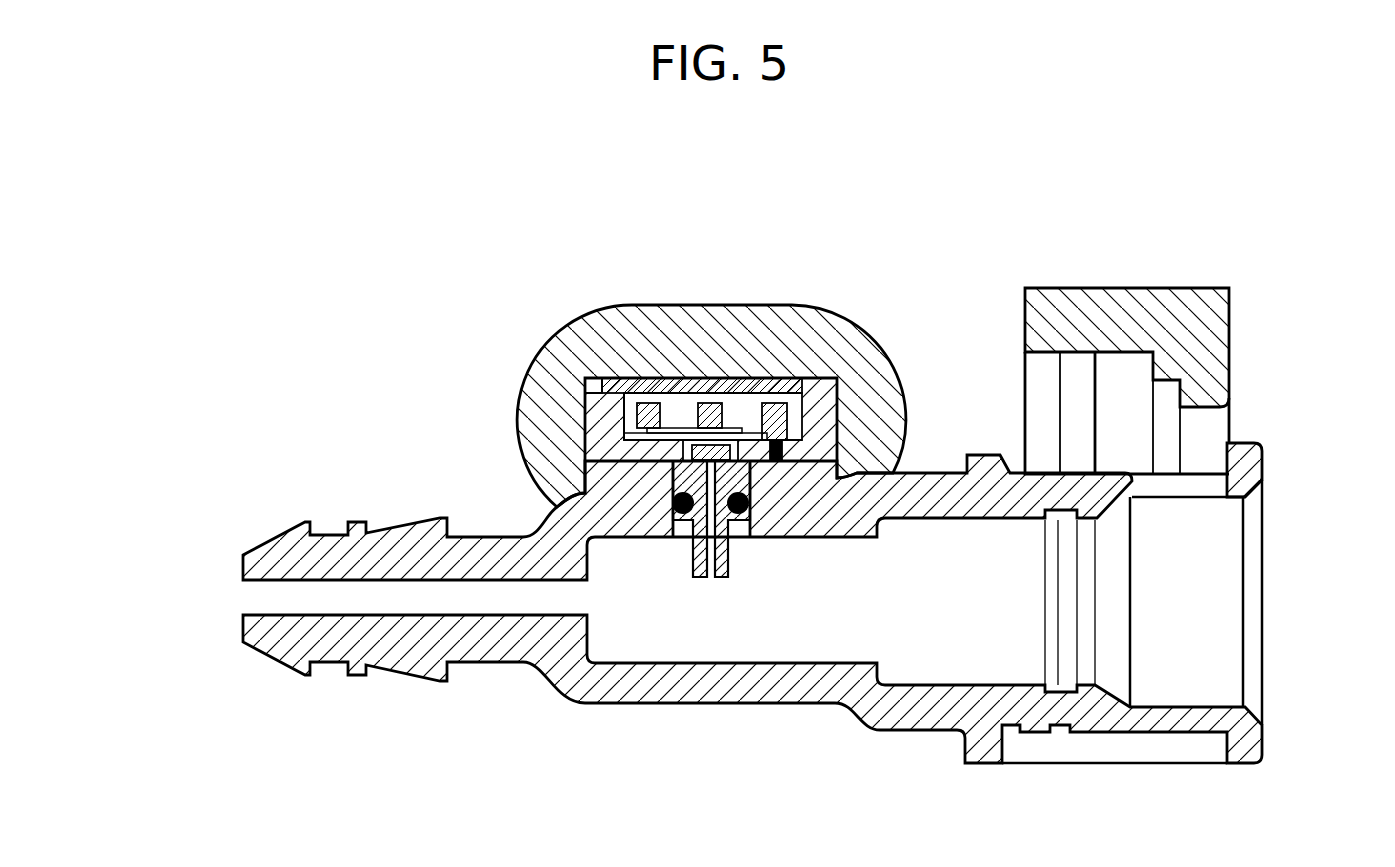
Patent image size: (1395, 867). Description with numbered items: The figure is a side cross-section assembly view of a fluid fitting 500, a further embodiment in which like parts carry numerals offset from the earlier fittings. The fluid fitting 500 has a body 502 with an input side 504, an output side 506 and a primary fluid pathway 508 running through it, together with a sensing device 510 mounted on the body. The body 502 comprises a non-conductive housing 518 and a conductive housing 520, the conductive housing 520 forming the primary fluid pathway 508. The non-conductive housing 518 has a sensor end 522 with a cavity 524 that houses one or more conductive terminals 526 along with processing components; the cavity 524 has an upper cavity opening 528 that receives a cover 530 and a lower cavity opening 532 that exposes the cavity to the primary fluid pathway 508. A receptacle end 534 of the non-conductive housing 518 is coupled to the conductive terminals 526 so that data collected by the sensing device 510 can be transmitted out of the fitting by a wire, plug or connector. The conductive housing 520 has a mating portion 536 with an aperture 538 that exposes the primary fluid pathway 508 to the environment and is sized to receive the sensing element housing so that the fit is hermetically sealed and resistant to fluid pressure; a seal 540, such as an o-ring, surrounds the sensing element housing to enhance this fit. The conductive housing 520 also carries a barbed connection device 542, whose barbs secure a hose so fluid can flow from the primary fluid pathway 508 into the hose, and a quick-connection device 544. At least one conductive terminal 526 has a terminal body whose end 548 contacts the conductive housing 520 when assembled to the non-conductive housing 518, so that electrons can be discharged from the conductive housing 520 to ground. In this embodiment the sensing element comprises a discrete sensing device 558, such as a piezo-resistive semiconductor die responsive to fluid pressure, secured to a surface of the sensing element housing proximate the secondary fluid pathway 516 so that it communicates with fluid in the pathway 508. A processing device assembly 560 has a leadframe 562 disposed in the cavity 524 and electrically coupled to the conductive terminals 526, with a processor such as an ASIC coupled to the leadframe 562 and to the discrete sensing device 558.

The fluid fitting 500 is at (1160, 163).
The body 502 is at (130, 305).
The input side 504 is at (1302, 580).
The output side 506 is at (174, 648).
The primary fluid pathway 508 is at (256, 598).
The sensing device 510 is at (578, 477).
The secondary fluid pathway 516 is at (661, 603).
The non-conductive housing 518 is at (906, 426).
The conductive housing 520 is at (708, 703).
The sensor end 522 is at (872, 393).
The cavity 524 is at (667, 400).
The conductive terminals 526 is at (707, 432).
The upper cavity opening 528 is at (632, 380).
The cover 530 is at (587, 367).
The lower cavity opening 532 is at (808, 410).
The receptacle end 534 is at (528, 299).
The mating portion 536 is at (870, 493).
The aperture 538 is at (728, 525).
The seal 540 is at (680, 516).
The barbed connection device 542 is at (355, 698).
The quick-connection device 544 is at (1212, 262).
The end 548 is at (783, 476).
The discrete sensing device 558 is at (749, 447).
The processing device assembly 560 is at (625, 462).
The leadframe 562 is at (758, 412).